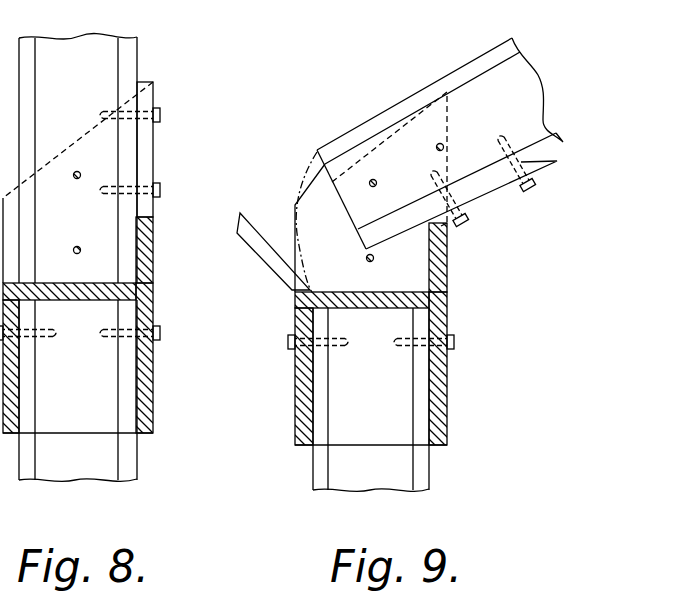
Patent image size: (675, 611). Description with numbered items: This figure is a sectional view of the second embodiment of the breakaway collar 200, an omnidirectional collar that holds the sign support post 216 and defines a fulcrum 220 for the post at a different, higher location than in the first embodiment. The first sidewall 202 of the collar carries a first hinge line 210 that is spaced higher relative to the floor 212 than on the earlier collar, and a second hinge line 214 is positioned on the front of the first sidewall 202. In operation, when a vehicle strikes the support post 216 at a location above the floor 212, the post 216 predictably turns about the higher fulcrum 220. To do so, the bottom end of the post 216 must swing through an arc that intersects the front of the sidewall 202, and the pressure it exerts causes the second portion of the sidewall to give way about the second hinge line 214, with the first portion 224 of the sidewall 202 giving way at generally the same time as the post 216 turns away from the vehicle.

In FIG. 8, the breakaway collar 200 is at (148, 400).
In FIG. 9, the breakaway collar 200 is at (300, 427).
In FIG. 8, the first sidewall 202 is at (150, 147).
In FIG. 8, the first hinge line 210 is at (146, 225).
In FIG. 9, the first hinge line 210 is at (438, 223).
In FIG. 8, the floor 212 is at (63, 298).
In FIG. 9, the floor 212 is at (368, 306).
In FIG. 9, the second hinge line 214 is at (295, 292).
In FIG. 8, the sign support post 216 is at (131, 52).
In FIG. 9, the sign support post 216 is at (500, 52).
In FIG. 8, the fulcrum 220 is at (150, 217).
In FIG. 9, the fulcrum 220 is at (445, 228).
In FIG. 9, the first portion 224 is at (497, 192).